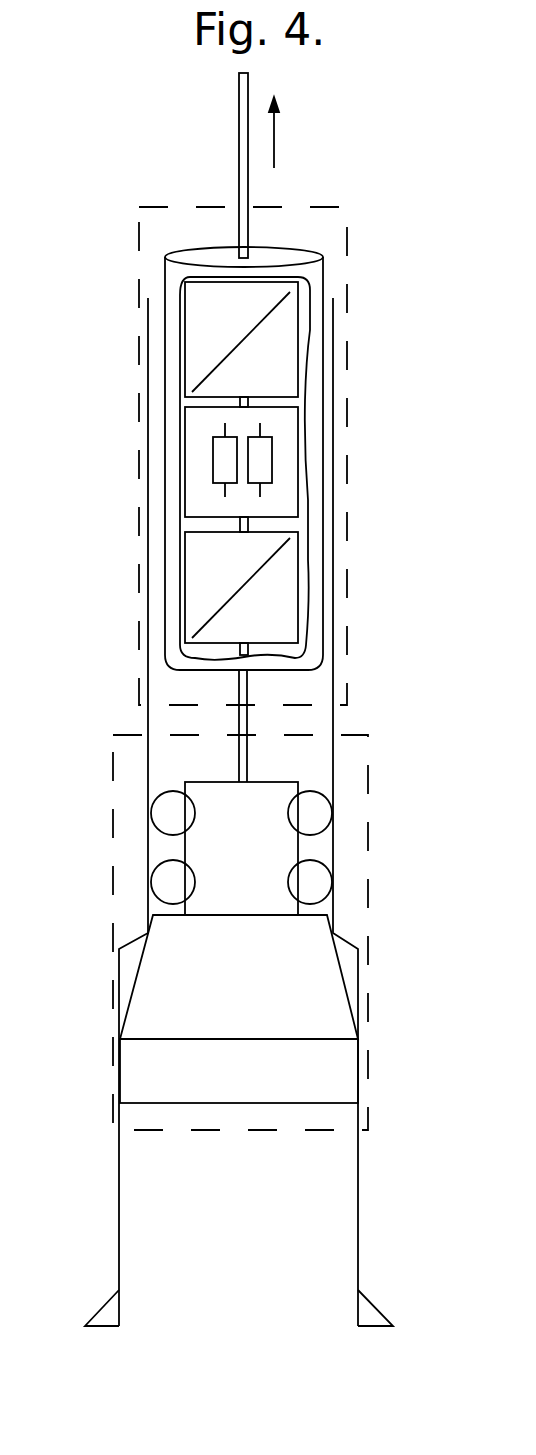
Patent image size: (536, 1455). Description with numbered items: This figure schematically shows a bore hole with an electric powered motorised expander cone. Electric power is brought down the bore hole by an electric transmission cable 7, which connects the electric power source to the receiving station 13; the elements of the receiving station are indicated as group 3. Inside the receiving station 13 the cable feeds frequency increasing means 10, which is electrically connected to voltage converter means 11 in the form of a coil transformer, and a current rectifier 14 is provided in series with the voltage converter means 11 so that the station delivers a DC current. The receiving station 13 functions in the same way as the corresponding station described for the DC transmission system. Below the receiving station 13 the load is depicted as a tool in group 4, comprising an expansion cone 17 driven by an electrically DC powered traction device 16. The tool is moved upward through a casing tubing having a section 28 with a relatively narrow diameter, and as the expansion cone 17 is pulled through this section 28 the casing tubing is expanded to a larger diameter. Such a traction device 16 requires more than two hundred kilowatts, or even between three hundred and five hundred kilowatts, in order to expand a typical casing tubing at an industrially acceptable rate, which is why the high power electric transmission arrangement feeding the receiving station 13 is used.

The receiver station group 3 is at (139, 222).
The tool group 4 is at (113, 777).
The electric transmission cable 7 is at (239, 163).
The frequency increasing means 10 is at (185, 338).
The voltage converter means 11 is at (185, 453).
The receiving station 13 is at (323, 284).
The current rectifier 14 is at (185, 593).
The traction device 16 is at (268, 792).
The expansion cone 17 is at (338, 988).
The casing tubing section 28 is at (333, 612).